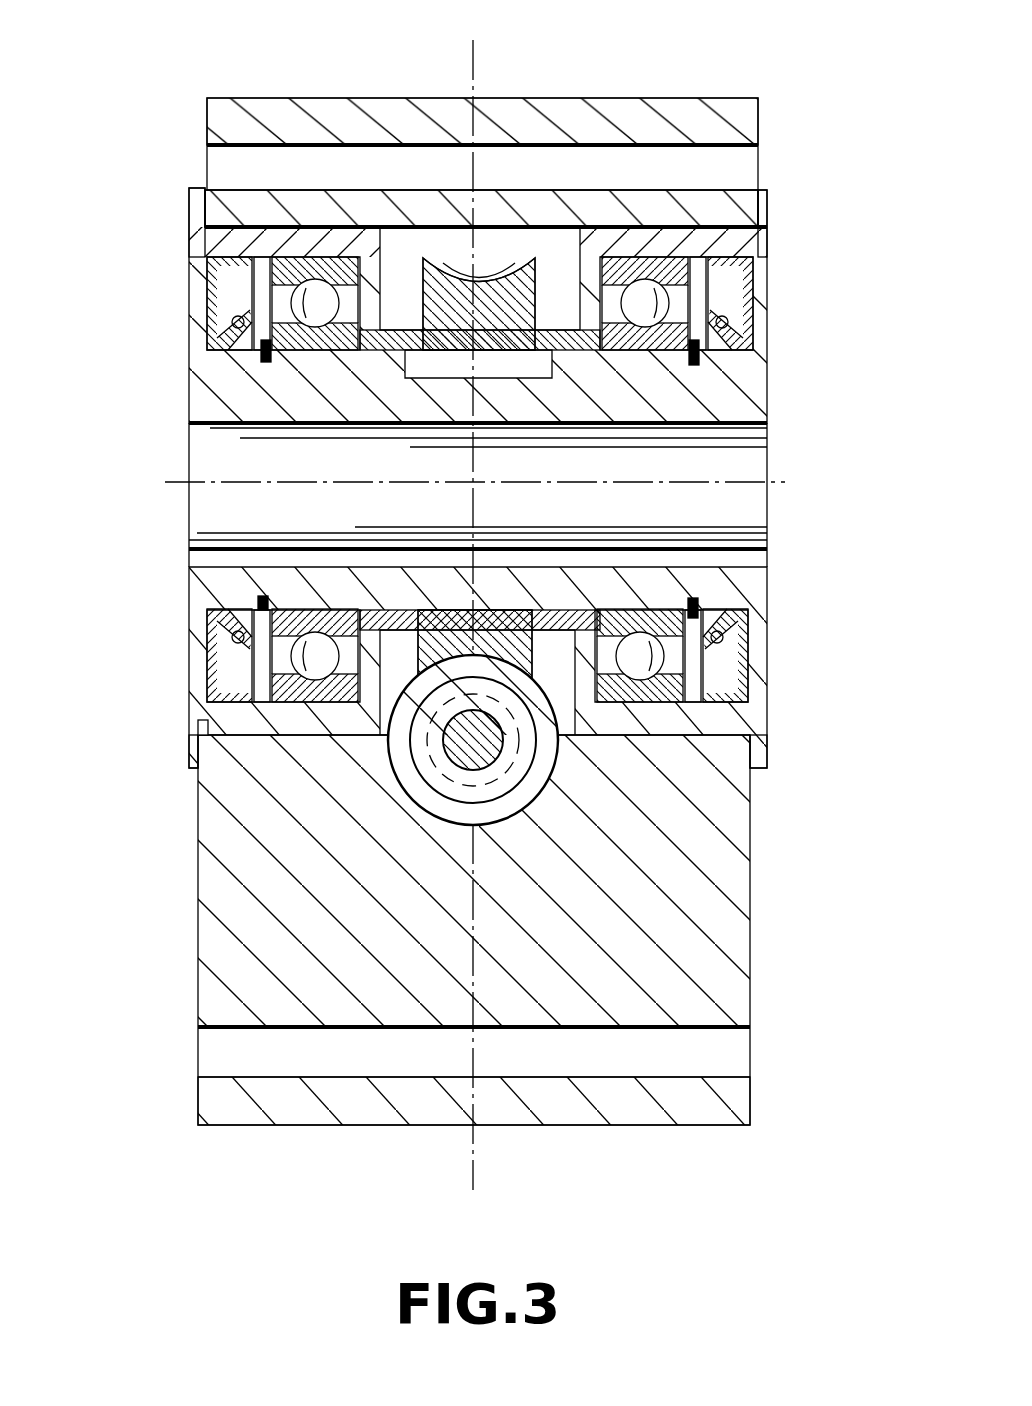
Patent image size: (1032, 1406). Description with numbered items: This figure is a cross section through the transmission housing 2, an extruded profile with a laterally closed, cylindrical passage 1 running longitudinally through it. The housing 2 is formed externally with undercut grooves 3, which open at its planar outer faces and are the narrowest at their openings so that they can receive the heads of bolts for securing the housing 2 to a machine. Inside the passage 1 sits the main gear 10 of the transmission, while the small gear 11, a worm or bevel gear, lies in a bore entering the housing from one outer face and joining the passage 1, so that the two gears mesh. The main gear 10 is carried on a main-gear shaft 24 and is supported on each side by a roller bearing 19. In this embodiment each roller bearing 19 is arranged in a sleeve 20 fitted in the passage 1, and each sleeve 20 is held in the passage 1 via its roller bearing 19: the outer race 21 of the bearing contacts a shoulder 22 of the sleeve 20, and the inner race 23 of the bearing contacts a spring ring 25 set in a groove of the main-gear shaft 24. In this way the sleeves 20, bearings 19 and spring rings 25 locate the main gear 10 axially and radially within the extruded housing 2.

The passage 1 is at (520, 245).
The transmission housing 2 is at (258, 1158).
The grooves 3 is at (737, 170).
The main gear 10 is at (457, 300).
The small gear 11 is at (655, 860).
The roller bearing 19 is at (358, 262).
The sleeve 20 is at (198, 240).
The outer race 21 is at (290, 252).
The shoulder 22 is at (380, 256).
The inner race 23 is at (300, 348).
The main-gear shaft 24 is at (723, 397).
The spring ring 25 is at (695, 365).